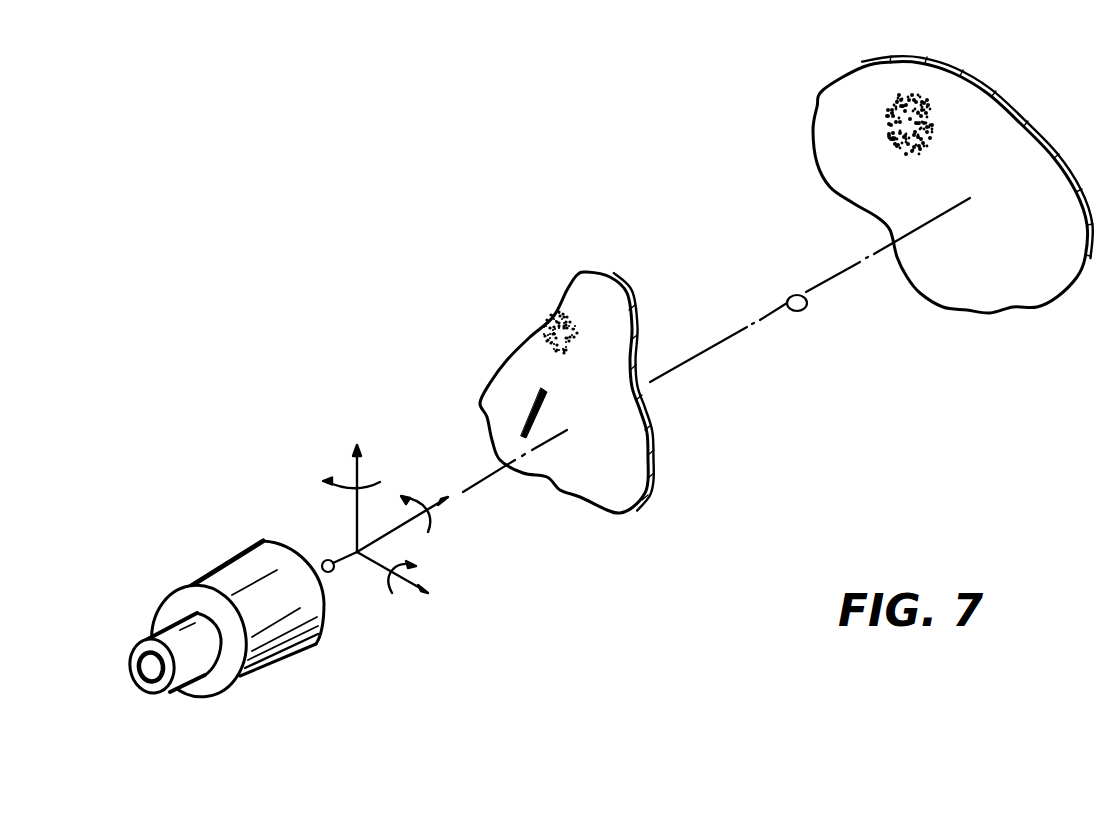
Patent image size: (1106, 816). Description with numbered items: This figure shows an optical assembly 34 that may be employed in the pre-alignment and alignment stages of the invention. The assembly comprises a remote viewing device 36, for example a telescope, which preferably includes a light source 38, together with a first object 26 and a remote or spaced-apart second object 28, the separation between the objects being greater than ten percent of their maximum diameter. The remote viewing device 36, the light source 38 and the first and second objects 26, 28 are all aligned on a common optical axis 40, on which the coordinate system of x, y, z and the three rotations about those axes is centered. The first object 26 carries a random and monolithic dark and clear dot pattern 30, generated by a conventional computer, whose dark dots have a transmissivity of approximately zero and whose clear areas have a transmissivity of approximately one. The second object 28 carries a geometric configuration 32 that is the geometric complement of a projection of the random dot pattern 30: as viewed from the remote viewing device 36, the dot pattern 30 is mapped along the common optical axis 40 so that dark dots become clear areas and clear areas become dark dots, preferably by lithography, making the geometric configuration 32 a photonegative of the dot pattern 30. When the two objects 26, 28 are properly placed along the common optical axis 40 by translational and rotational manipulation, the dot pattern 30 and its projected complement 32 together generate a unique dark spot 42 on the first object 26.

The first object 26 is at (565, 276).
The second object 28 is at (815, 90).
The random dot pattern 30 is at (543, 325).
The geometric configuration 32 is at (887, 123).
The optical assembly 34 is at (338, 296).
The remote viewing device 36 is at (202, 564).
The light source 38 is at (322, 560).
The common optical axis 40 is at (783, 295).
The unique dark spot 42 is at (527, 410).